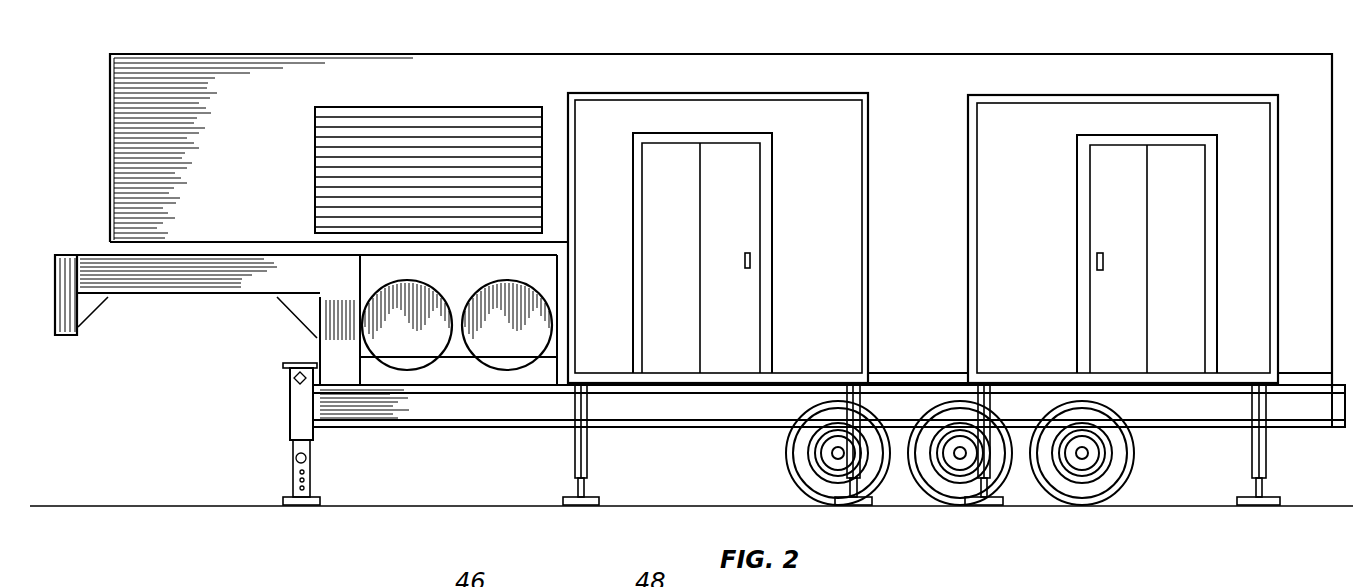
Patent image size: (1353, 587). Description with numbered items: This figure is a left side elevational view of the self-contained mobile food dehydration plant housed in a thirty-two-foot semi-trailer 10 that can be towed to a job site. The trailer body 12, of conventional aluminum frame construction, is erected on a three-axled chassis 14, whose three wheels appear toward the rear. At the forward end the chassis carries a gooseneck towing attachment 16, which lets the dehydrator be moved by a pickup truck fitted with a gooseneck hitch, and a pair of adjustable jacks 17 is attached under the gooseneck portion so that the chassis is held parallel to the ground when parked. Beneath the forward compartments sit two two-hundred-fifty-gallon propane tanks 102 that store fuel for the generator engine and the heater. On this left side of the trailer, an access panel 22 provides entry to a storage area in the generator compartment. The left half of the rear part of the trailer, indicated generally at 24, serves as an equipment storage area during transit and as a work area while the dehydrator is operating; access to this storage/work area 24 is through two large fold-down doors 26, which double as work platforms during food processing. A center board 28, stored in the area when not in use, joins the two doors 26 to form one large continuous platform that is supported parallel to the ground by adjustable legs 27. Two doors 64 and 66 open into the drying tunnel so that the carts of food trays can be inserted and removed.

The semi-trailer 10 is at (209, 43).
The trailer body 12 is at (338, 58).
The chassis 14 is at (468, 427).
The towing attachment 16 is at (122, 285).
The adjustable jacks 17 is at (288, 406).
The access panel 22 is at (395, 120).
The storage/work area 24 is at (718, 238).
The fold-down doors 26 is at (808, 380).
The adjustable legs 27 is at (575, 452).
The center board 28 is at (900, 380).
The door 64 is at (745, 212).
The door 66 is at (1105, 197).
The tanks 102 is at (470, 297).